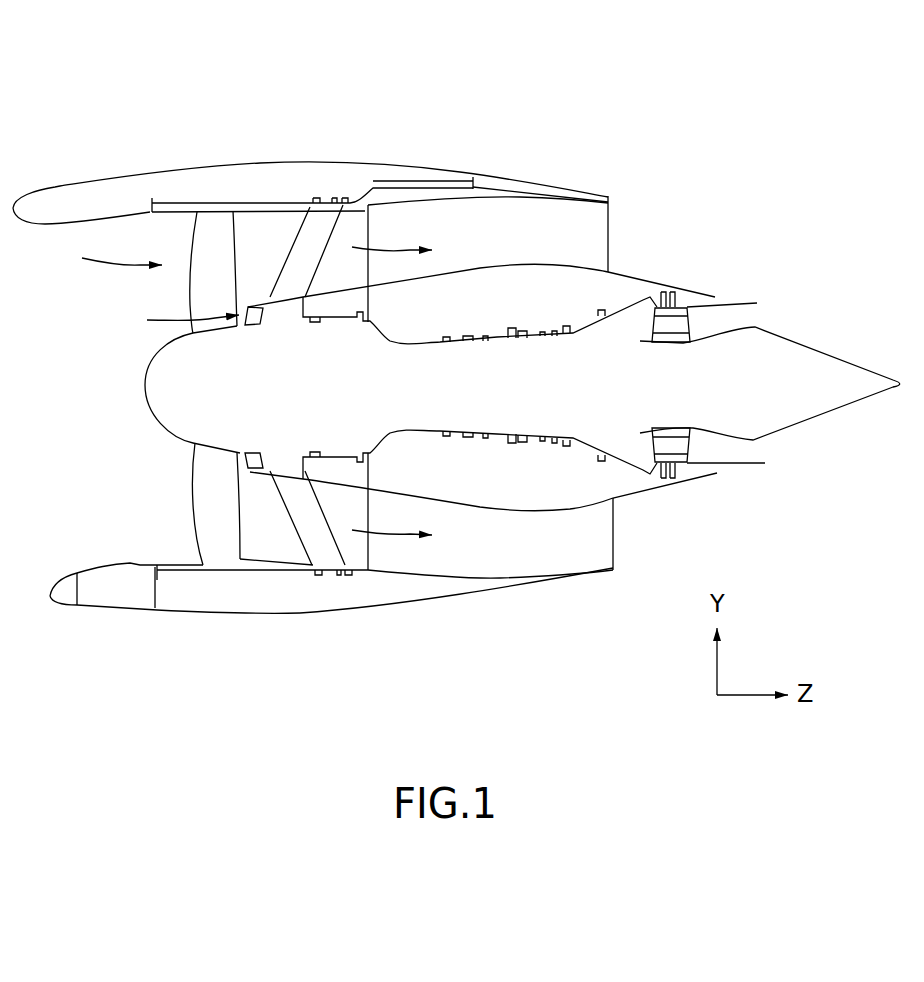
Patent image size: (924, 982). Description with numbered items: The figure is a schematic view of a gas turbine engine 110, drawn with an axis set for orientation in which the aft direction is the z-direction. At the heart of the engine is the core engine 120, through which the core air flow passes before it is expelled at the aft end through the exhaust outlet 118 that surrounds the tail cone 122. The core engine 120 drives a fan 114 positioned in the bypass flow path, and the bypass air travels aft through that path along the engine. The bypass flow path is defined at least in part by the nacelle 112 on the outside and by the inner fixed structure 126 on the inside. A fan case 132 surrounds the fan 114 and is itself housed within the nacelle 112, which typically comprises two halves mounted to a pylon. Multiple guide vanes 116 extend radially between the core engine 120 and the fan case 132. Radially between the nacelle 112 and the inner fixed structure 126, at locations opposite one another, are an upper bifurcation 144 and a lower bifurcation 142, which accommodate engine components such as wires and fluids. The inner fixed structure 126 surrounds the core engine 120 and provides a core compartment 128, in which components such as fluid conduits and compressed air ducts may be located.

The gas turbine engine 110 is at (613, 124).
The nacelle 112 is at (187, 162).
The fan 114 is at (200, 495).
The guide vanes 116 is at (292, 253).
The exhaust outlet 118 is at (757, 320).
The core engine 120 is at (501, 332).
The tail cone 122 is at (798, 419).
The inner fixed structure 126 is at (494, 265).
The core compartment 128 is at (517, 494).
The fan case 132 is at (180, 573).
The lower bifurcation 142 is at (580, 554).
The upper bifurcation 144 is at (603, 222).